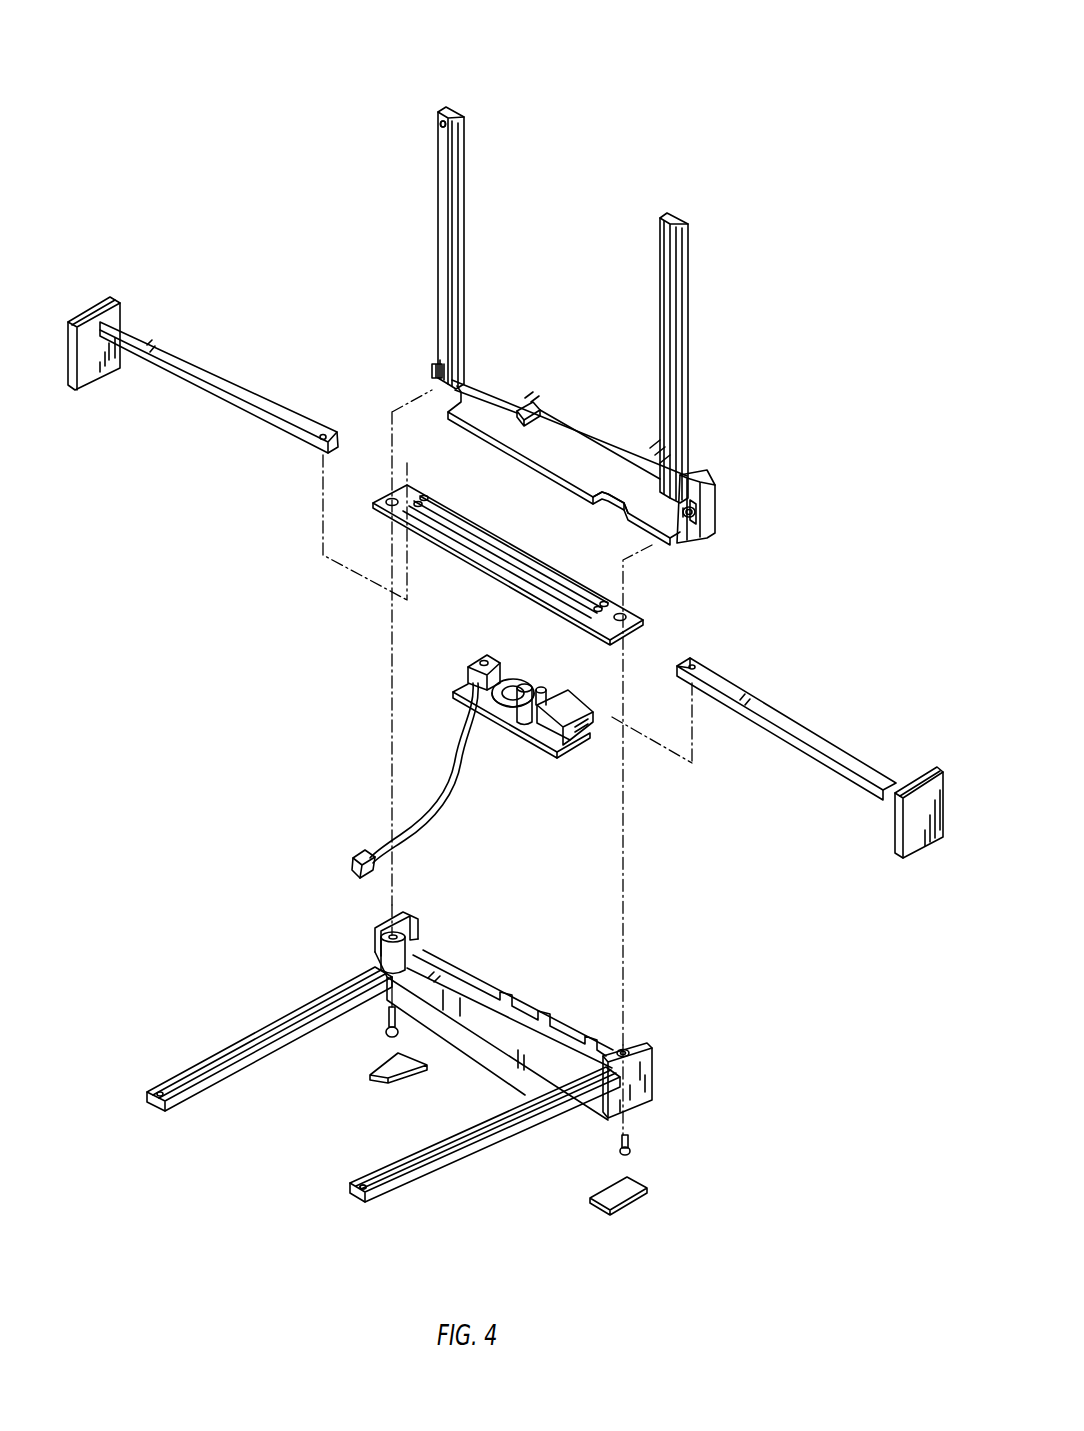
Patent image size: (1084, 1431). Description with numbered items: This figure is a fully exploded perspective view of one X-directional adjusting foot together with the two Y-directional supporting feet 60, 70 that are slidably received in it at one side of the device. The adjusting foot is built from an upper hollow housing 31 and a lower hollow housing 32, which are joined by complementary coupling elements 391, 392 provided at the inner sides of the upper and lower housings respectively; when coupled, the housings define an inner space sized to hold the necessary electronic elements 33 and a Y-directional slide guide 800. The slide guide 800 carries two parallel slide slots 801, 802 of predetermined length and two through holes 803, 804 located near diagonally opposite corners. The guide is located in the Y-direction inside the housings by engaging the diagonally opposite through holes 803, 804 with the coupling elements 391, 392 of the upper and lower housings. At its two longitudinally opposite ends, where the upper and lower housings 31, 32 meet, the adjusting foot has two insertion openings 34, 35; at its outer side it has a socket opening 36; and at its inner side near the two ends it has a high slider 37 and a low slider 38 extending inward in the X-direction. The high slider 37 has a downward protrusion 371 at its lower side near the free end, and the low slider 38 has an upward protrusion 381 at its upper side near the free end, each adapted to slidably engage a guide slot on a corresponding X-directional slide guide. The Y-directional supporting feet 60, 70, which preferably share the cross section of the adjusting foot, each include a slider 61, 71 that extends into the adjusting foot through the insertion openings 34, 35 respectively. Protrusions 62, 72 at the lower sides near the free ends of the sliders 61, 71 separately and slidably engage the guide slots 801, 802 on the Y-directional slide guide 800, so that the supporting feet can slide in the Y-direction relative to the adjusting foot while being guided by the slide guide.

The upper hollow housing 31 is at (522, 388).
The lower hollow housing 32 is at (592, 1100).
The electronic elements 33 is at (535, 728).
The insertion opening 34 is at (718, 500).
The insertion opening 35 is at (438, 375).
The socket opening 36 is at (605, 495).
The high slider 37 is at (688, 258).
The low slider 38 is at (440, 152).
The Y-directional supporting foot 60 is at (900, 842).
The slider 61 is at (792, 718).
The protrusion 62 is at (686, 684).
The Y-directional supporting foot 70 is at (93, 303).
The slider 71 is at (190, 358).
The protrusion 72 is at (323, 457).
The downward protrusion 371 is at (355, 1198).
The upward protrusion 381 is at (456, 112).
The coupling element 391 is at (672, 540).
The coupling element 392 is at (630, 1048).
The Y-directional slide guide 800 is at (452, 557).
The slide slot 801 is at (503, 557).
The slide slot 802 is at (523, 587).
The through hole 803 is at (373, 507).
The through hole 804 is at (628, 608).